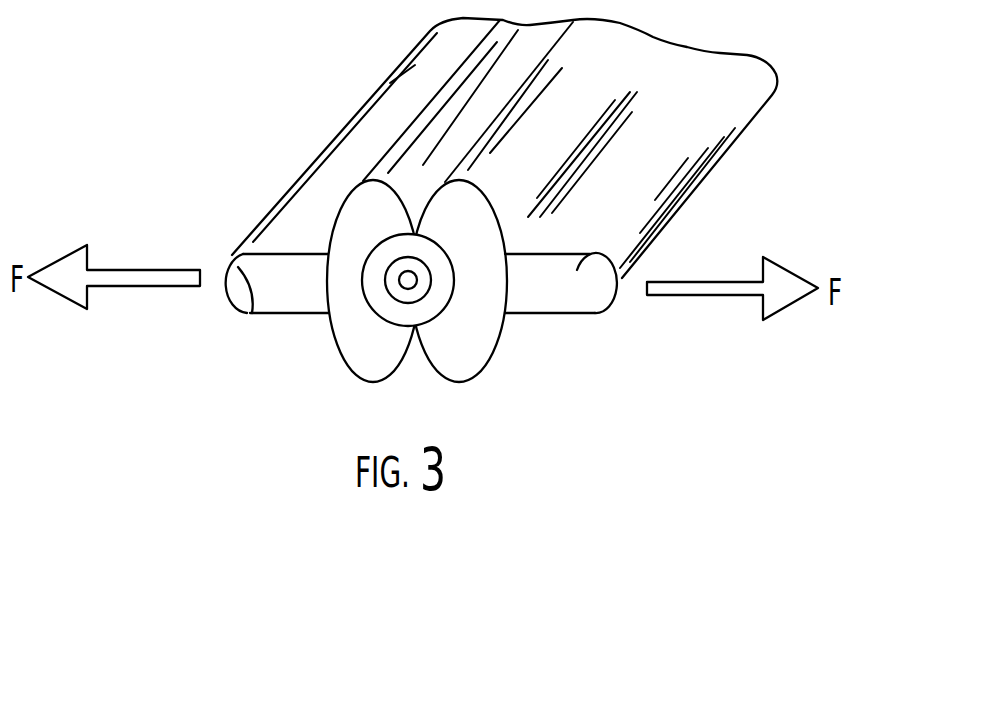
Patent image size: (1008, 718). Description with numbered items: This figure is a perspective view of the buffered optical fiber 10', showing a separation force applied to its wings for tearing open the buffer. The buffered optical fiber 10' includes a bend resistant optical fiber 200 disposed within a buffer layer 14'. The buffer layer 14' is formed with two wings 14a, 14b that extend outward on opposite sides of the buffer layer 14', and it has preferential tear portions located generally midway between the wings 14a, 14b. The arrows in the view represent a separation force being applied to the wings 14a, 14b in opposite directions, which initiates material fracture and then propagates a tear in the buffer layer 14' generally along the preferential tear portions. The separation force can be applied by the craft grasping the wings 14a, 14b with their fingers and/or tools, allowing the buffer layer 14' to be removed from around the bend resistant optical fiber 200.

The buffered optical fiber 10' is at (462, 148).
The buffer layer 14' is at (611, 255).
The wing 14a is at (592, 253).
The wing 14b is at (253, 313).
The bend resistant optical fiber 200 is at (449, 302).